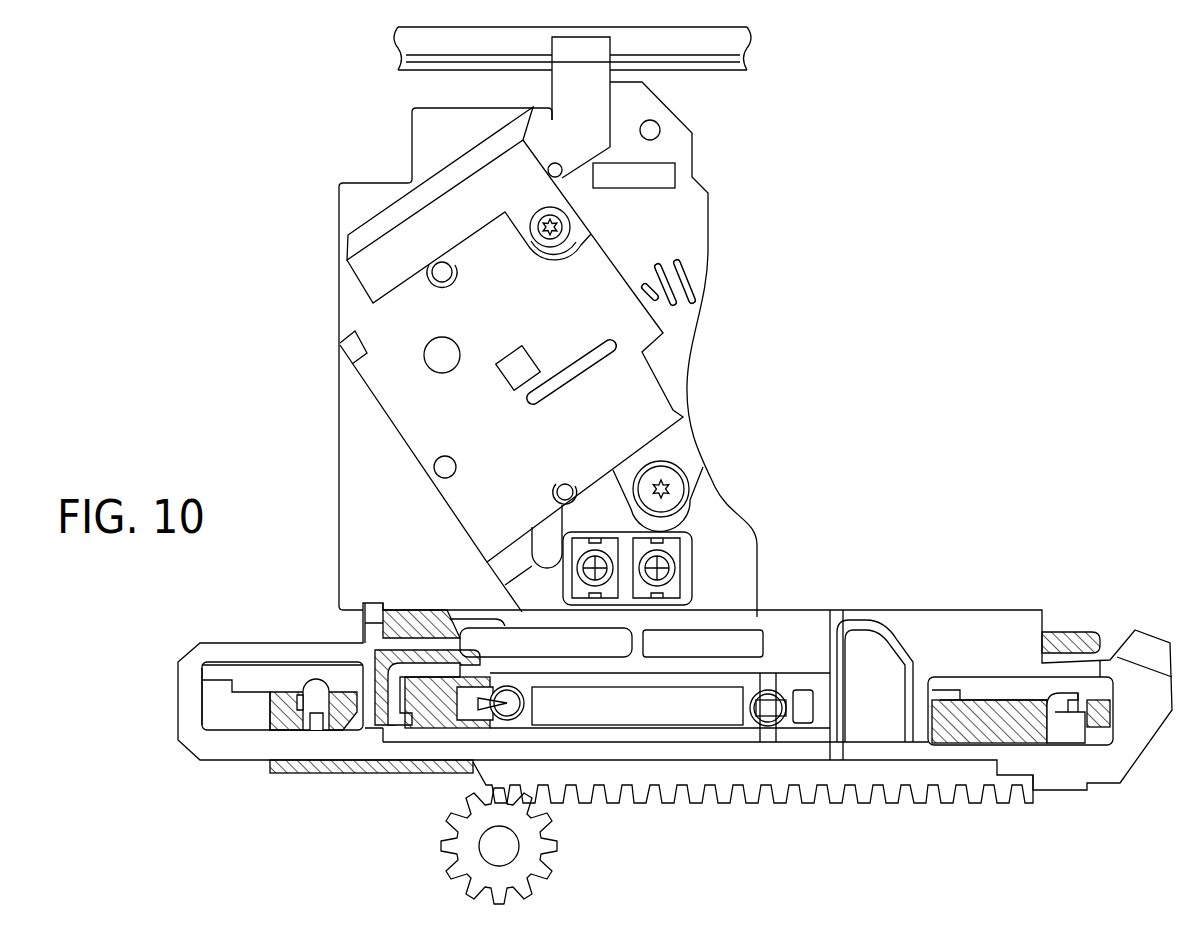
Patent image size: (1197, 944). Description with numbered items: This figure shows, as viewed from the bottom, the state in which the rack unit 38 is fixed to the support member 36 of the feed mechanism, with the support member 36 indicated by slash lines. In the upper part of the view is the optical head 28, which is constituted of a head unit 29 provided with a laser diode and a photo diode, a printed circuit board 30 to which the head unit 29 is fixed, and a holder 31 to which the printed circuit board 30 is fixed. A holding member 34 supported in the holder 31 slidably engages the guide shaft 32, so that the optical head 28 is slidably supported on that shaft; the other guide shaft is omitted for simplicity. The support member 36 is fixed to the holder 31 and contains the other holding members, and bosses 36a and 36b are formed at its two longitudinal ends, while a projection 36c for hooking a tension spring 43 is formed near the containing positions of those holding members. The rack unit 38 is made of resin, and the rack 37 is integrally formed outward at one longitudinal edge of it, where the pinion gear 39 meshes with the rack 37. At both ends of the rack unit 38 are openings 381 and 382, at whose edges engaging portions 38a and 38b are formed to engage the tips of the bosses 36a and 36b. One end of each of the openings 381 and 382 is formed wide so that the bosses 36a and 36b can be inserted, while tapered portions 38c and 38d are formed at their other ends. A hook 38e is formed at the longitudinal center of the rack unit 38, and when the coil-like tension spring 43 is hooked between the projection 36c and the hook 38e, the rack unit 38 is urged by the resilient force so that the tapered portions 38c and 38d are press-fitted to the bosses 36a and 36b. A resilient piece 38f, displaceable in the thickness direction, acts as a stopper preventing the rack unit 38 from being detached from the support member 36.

The optical head 28 is at (690, 390).
The head unit 29 is at (385, 392).
The printed circuit board 30 is at (358, 483).
The holder 31 is at (683, 147).
The guide shaft 32 is at (728, 46).
The holding member 34 is at (571, 94).
The support member 36 is at (280, 773).
The boss 36a is at (317, 715).
The boss 36b is at (1063, 728).
The projection 36c is at (508, 708).
The rack 37 is at (893, 797).
The rack unit 38 is at (805, 610).
The engaging portion 38a is at (253, 680).
The engaging portion 38b is at (987, 687).
The tapered portion 38c is at (340, 692).
The tapered portion 38d is at (1105, 700).
The hook 38e is at (785, 712).
The resilient piece 38f is at (398, 722).
The pinion gear 39 is at (448, 846).
The tension spring 43 is at (675, 712).
The opening 381 is at (218, 725).
The opening 382 is at (988, 736).